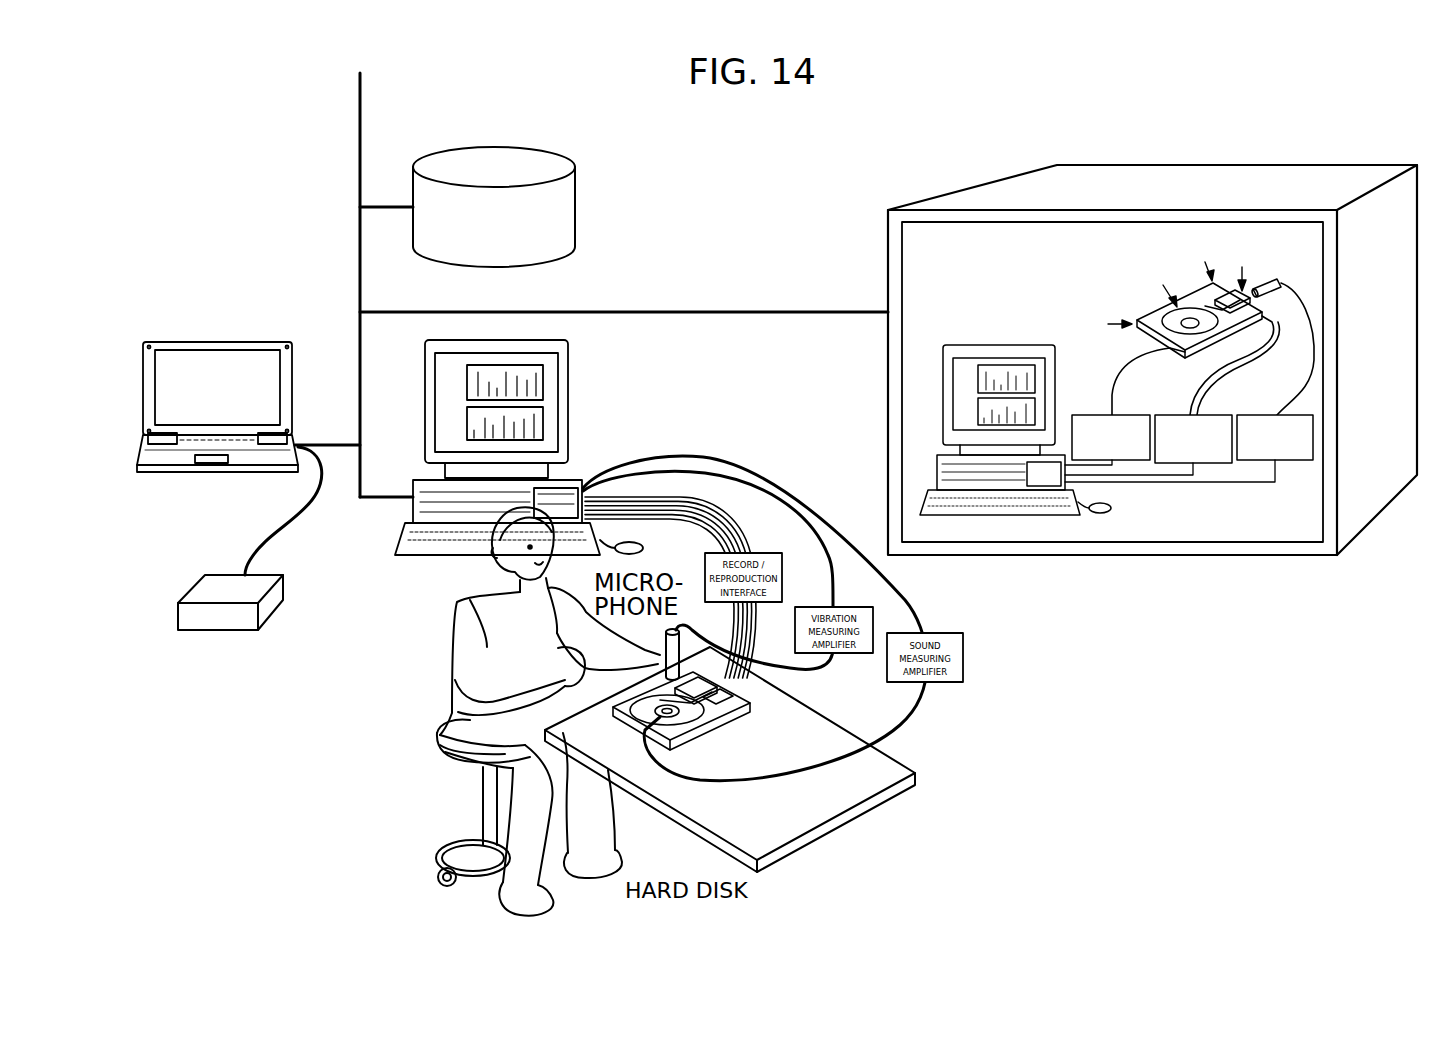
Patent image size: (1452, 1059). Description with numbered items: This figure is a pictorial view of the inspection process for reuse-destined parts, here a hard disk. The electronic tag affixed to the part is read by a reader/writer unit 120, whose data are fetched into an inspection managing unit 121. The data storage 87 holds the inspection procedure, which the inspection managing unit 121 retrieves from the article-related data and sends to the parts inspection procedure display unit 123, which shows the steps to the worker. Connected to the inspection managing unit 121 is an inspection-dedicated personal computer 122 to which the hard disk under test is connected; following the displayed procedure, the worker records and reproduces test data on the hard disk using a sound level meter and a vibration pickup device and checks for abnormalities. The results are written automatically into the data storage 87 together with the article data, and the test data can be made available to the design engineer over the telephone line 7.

The telephone line 7 is at (360, 123).
The data storage 87 is at (575, 207).
The inspection managing unit 121 is at (188, 342).
The inspection-dedicated personal computer 122 is at (568, 380).
The reader/writer unit 120 is at (192, 590).
The parts inspection procedure display unit 123 is at (1205, 555).